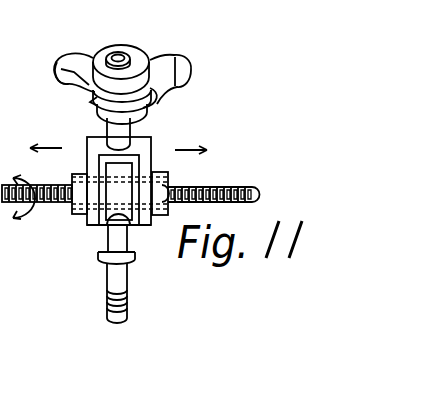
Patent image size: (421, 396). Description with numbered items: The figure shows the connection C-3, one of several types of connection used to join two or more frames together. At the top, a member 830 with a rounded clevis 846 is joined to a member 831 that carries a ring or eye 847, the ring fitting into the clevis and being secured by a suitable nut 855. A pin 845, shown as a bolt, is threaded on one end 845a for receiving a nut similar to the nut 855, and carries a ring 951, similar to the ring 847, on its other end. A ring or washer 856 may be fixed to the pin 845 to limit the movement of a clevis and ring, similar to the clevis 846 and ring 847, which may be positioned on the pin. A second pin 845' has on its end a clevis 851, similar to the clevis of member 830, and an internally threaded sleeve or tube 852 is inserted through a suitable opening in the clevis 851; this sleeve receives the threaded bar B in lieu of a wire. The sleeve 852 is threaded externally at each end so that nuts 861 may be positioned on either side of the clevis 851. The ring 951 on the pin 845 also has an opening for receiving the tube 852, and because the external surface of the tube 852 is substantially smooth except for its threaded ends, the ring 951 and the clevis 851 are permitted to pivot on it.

The member 830 is at (174, 58).
The member 831 is at (73, 72).
The nut 855 is at (137, 53).
The rounded clevis 846 is at (144, 106).
The ring or eye 847 is at (90, 103).
The pin 845' is at (154, 134).
The clevis 851 is at (92, 158).
The internally threaded sleeve or tube 852 is at (85, 222).
The nuts 861 is at (152, 219).
The threaded bar B is at (228, 186).
The connection C-3 is at (208, 156).
The ring 951 is at (102, 237).
The pin 845 is at (135, 274).
The ring or washer 856 is at (100, 260).
The threaded end 845a is at (129, 308).